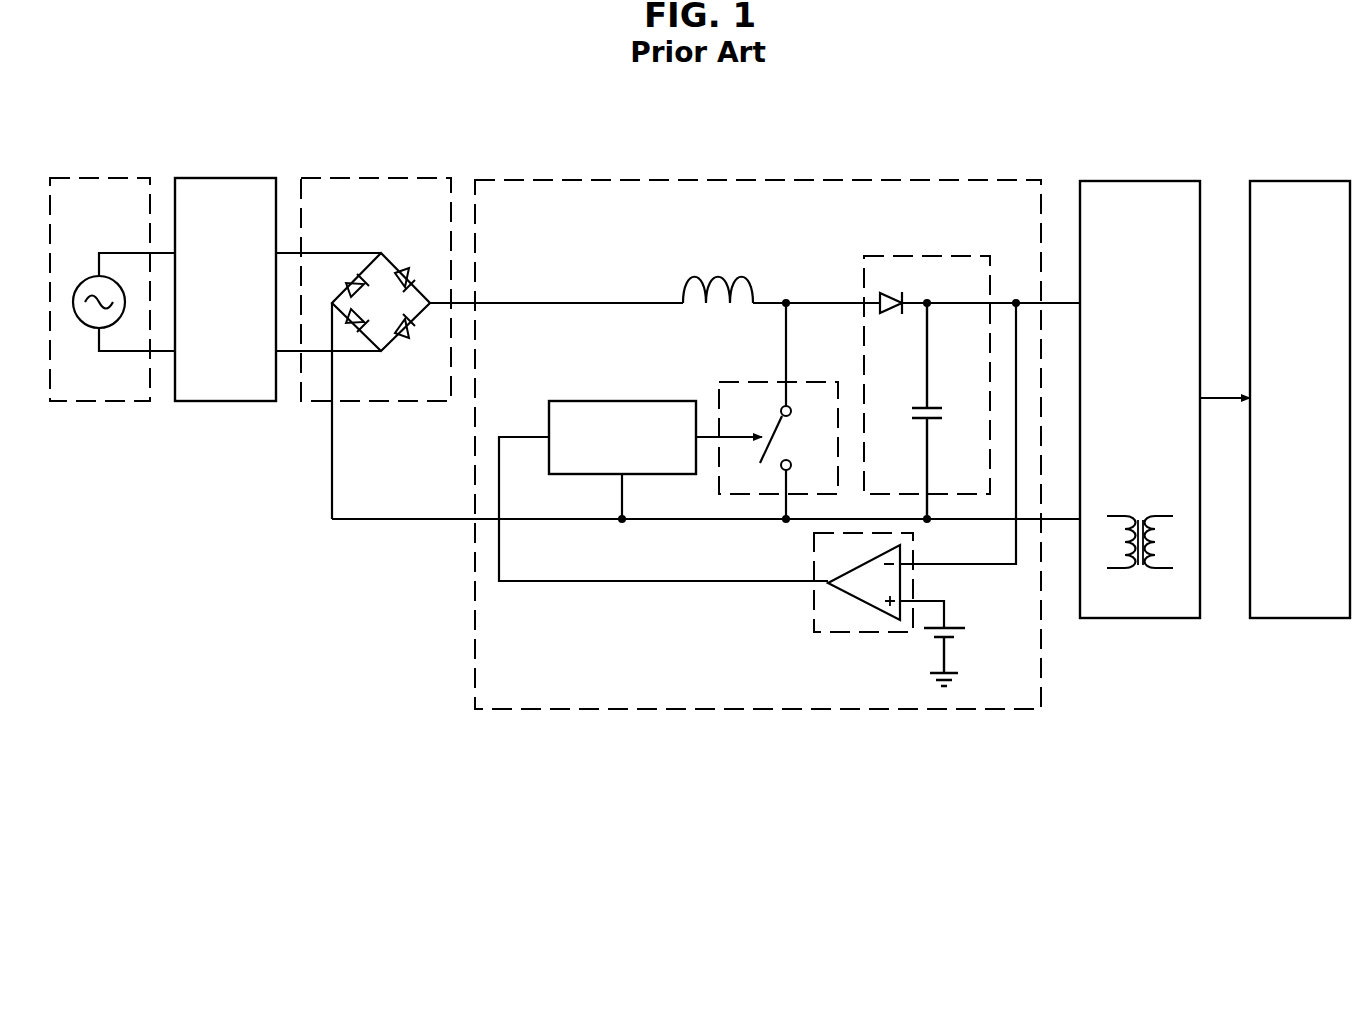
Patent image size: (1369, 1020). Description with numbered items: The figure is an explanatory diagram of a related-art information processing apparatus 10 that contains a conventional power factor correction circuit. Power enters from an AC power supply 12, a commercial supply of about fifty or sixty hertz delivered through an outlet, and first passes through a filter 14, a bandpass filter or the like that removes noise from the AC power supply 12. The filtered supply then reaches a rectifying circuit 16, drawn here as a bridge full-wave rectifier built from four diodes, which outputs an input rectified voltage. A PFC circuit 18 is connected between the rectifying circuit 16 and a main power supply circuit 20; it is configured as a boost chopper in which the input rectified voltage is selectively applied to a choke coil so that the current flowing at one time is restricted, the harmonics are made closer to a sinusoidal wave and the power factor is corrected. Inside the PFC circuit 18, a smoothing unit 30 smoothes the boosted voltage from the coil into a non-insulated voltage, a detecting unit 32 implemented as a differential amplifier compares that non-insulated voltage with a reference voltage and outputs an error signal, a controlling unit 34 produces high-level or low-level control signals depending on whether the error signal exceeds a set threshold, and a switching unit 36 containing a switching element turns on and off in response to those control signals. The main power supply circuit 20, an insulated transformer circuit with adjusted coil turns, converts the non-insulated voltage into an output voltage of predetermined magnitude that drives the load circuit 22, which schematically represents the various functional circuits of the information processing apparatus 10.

The information processing apparatus 10 is at (1272, 77).
The AC power supply 12 is at (101, 178).
The filter 14 is at (227, 178).
The rectifying circuit 16 is at (375, 178).
The PFC circuit 18 is at (957, 180).
The main power supply circuit 20 is at (1142, 181).
The load circuit 22 is at (1298, 181).
The smoothing unit 30 is at (880, 256).
The detecting unit 32 is at (913, 533).
The controlling unit 34 is at (622, 401).
The switching unit 36 is at (744, 382).